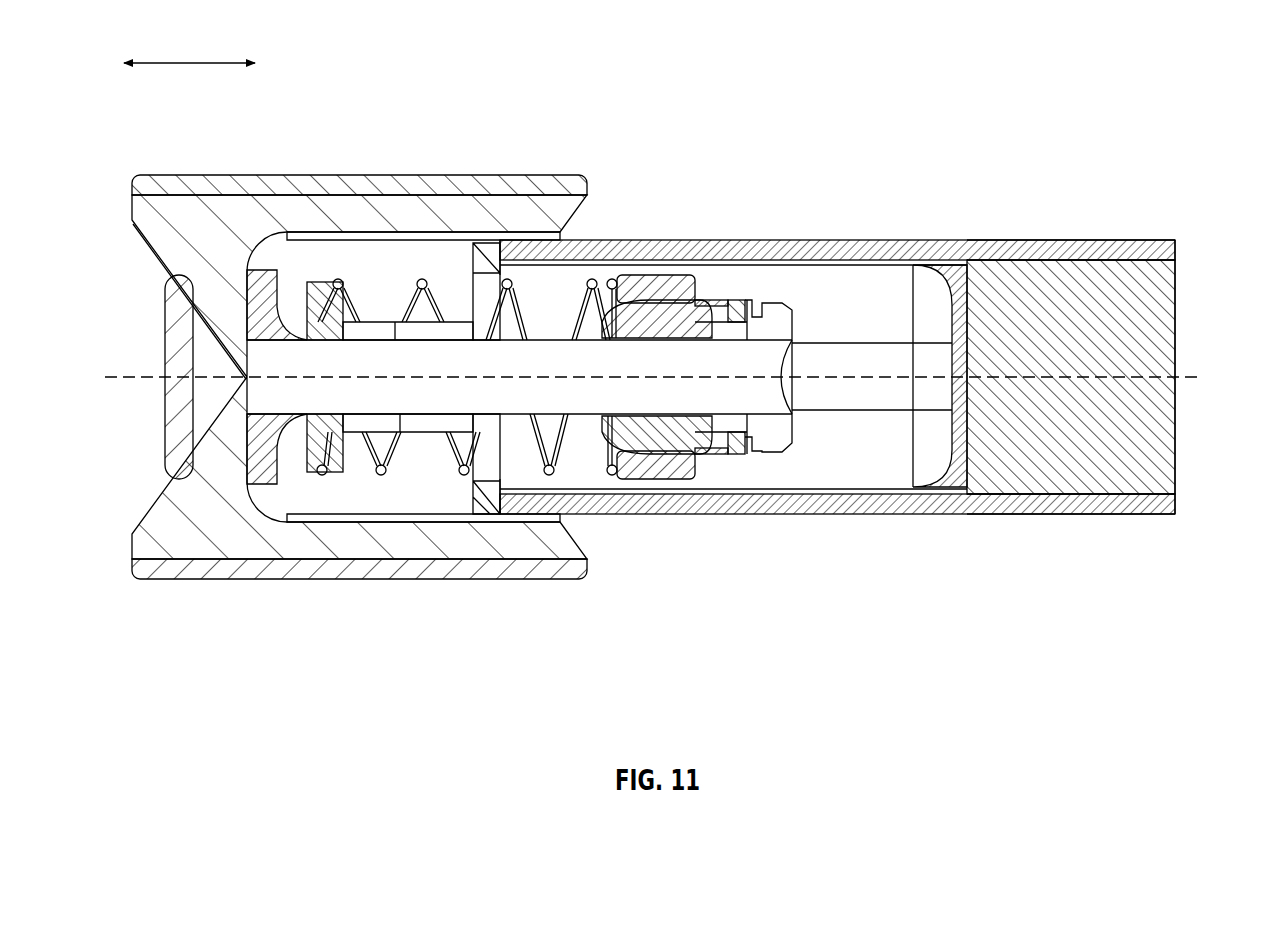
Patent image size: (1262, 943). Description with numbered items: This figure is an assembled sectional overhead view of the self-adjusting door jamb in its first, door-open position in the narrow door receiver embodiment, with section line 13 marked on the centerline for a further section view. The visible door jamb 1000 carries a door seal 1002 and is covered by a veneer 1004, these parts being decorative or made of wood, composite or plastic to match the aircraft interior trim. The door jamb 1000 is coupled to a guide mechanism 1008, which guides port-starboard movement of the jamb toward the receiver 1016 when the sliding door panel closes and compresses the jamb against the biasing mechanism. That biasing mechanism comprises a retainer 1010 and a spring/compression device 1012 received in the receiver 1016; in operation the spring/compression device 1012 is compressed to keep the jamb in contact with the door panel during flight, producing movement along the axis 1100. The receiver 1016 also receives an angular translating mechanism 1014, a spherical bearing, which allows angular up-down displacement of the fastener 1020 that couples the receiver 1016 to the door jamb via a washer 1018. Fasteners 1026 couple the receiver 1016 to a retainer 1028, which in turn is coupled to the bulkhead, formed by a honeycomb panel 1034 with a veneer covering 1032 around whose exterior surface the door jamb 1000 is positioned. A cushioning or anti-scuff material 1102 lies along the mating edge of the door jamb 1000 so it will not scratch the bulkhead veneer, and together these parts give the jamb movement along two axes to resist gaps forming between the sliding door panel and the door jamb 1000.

The section line 13- 13 is at (107, 377).
The axis 1100 is at (226, 61).
The door jamb 1000 is at (188, 547).
The door seal 1002 is at (162, 318).
The veneer 1004 is at (263, 584).
The guide mechanism 1008 is at (275, 447).
The retainer 1010 is at (487, 268).
The spring/compression device 1012 is at (588, 272).
The angular translating mechanism 1014 is at (677, 287).
The receiver 1016 is at (332, 439).
The washer 1018 is at (737, 297).
The fastener 1020 is at (784, 292).
The fasteners 1026 is at (491, 470).
The retainer 1028 is at (770, 257).
The veneer covering 1032 is at (1124, 252).
The panel 1034 is at (1160, 285).
The cushioning or anti-scuff material 1102 is at (396, 244).